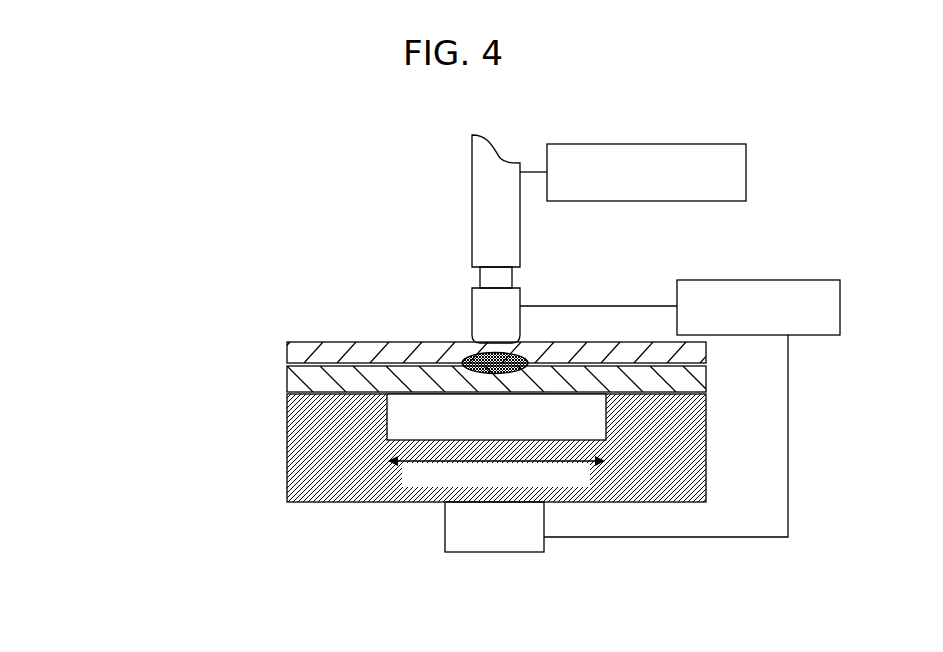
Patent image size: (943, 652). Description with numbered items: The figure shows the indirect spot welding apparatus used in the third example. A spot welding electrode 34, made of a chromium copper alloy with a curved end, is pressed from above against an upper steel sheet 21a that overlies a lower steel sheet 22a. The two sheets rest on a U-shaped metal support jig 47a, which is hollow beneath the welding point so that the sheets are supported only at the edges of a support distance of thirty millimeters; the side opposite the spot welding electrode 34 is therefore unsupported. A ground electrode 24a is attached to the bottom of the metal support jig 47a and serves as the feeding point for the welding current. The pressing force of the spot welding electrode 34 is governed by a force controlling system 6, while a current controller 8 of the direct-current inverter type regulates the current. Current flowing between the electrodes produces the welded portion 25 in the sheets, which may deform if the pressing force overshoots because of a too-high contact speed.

The force controlling system 6 is at (710, 144).
The current controller 8 is at (826, 280).
The spot welding electrode 34 is at (484, 307).
The welded portion 25 is at (476, 354).
The upper steel sheet 21a is at (287, 352).
The lower steel sheet 22a is at (287, 378).
The metal support jig 47a is at (310, 493).
The ground electrode 24a is at (488, 542).